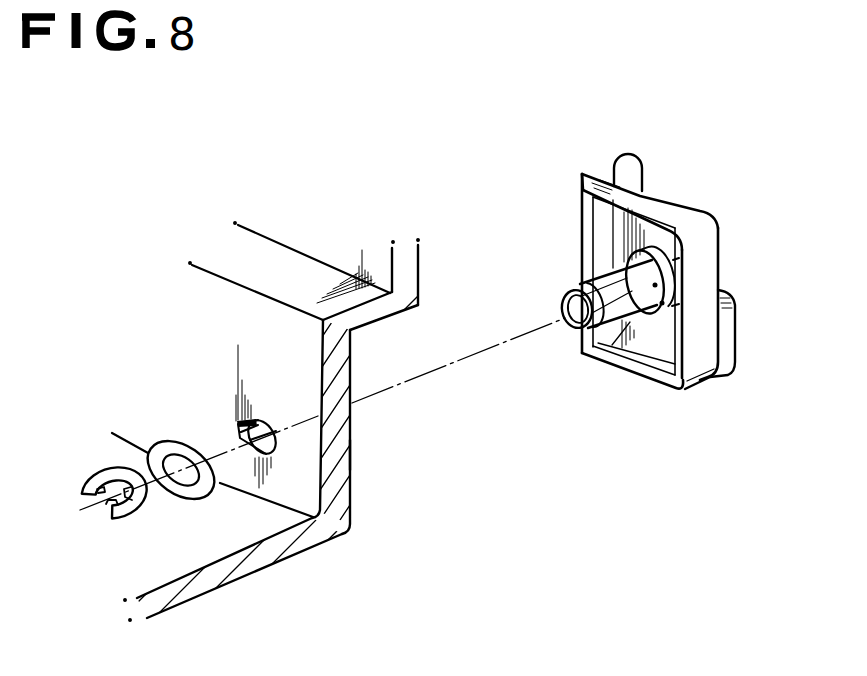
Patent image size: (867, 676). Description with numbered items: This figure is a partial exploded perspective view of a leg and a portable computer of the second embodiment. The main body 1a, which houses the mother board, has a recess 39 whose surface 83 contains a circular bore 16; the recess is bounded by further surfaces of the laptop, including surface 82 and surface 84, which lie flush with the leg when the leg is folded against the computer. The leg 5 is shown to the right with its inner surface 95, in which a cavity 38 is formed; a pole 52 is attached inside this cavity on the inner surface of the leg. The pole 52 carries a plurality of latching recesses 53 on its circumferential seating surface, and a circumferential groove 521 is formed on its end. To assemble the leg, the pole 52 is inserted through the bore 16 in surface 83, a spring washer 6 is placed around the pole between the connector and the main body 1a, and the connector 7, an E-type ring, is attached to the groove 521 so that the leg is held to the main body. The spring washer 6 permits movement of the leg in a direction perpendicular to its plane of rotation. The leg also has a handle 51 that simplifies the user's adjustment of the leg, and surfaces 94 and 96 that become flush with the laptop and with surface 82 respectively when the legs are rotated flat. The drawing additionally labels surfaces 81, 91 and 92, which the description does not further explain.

The main body 1a is at (285, 550).
The leg 5 is at (720, 390).
The spring washer 6 is at (198, 494).
The connector 7 is at (130, 517).
The bore 16 is at (257, 420).
The cavity 38 is at (603, 228).
The recess 39 is at (350, 468).
The handle 51 is at (630, 155).
The pole 52 is at (640, 367).
The circumferential groove 521 is at (607, 367).
The latching recesses 53 is at (580, 265).
The inclined flange 81 is at (385, 318).
The surface of the laptop 82 is at (237, 577).
The surface of the recess 83 is at (352, 428).
The surface of the laptop 84 is at (422, 268).
The top wall of holder 91 is at (657, 200).
The left side wall of holder 92 is at (578, 216).
The surface of the leg 94 is at (696, 280).
The inner surface 95 is at (590, 188).
The surface of the leg 96 is at (612, 363).